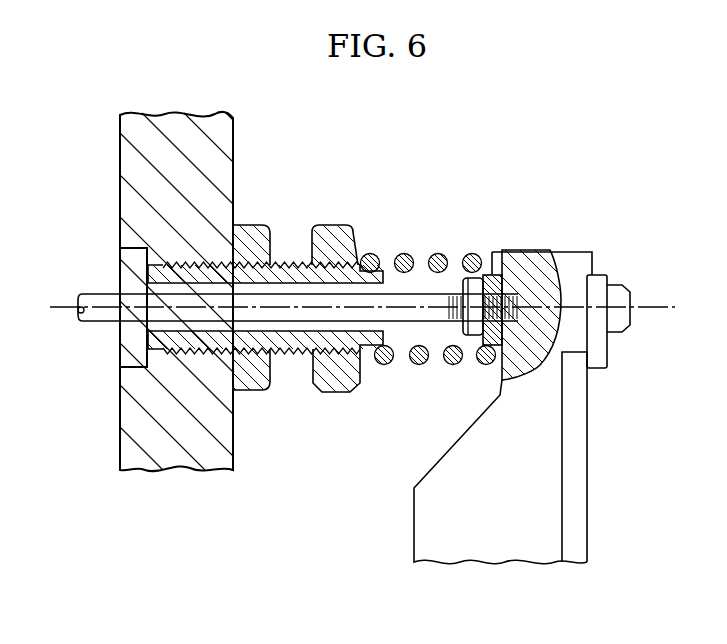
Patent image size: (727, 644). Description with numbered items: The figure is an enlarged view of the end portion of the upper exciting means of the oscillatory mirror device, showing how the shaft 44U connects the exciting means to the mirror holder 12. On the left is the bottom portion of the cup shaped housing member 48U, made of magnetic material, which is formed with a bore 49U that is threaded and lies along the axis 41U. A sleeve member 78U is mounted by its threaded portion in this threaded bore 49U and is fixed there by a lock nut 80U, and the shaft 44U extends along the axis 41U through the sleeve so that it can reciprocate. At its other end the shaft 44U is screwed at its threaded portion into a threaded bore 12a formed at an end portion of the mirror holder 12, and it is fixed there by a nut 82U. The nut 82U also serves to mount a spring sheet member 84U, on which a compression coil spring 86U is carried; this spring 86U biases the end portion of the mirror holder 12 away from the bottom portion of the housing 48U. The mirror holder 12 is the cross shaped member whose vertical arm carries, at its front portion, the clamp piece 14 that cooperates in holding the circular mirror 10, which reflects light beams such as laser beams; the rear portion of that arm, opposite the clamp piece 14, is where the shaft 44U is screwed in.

The cup shaped housing member 48U is at (170, 462).
The bore 49U is at (167, 260).
The shaft 44U is at (285, 318).
The lock nut 80U is at (252, 226).
The sleeve member 78U is at (342, 226).
The compression coil spring 86U is at (390, 365).
The nut 82U is at (467, 285).
The spring sheet member 84U is at (497, 268).
The threaded bore 12a is at (528, 270).
The circular mirror 10 is at (582, 447).
The mirror holder 12 is at (548, 528).
The clamp piece 14 is at (600, 353).
The axis 41U is at (657, 305).